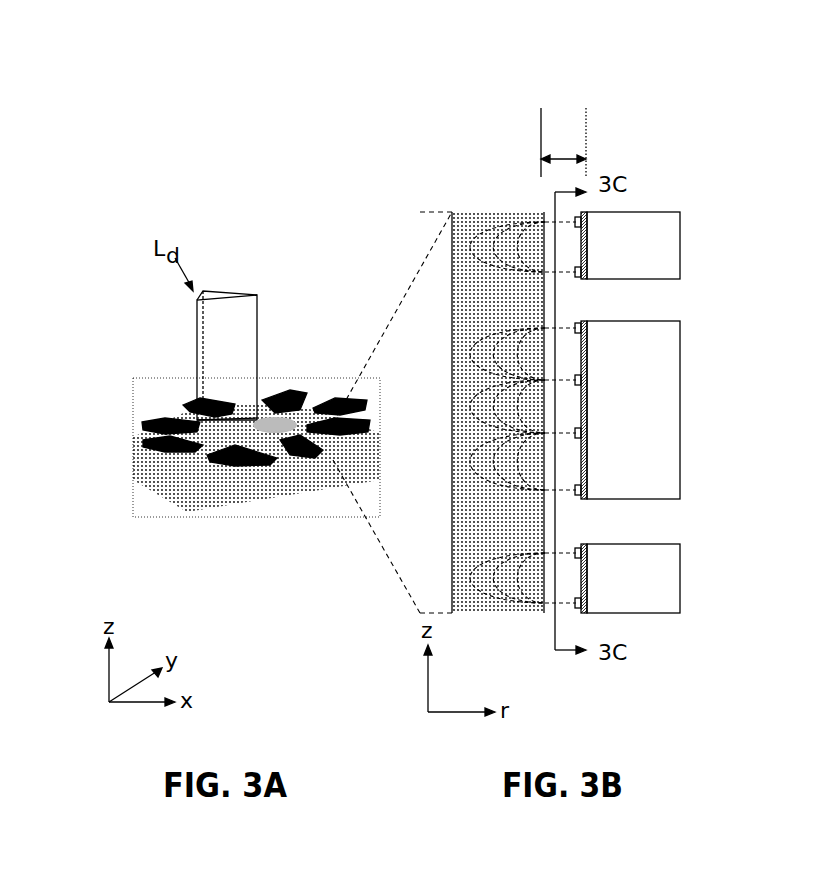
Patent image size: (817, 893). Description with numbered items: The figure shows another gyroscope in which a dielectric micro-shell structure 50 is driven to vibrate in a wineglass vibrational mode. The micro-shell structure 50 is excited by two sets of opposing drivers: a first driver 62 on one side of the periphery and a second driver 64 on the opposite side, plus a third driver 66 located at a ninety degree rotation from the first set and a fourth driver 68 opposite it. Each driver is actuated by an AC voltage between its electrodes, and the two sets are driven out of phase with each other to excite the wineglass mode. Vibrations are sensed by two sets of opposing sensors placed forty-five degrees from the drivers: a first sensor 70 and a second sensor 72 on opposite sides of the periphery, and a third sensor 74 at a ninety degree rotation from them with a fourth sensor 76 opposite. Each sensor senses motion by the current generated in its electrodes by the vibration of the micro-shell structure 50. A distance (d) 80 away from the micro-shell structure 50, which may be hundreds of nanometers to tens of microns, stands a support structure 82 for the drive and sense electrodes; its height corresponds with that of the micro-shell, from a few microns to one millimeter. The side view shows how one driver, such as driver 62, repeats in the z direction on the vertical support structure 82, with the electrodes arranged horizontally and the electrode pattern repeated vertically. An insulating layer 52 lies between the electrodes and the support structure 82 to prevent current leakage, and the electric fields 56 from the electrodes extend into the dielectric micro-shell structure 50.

In FIG. 3A, the dielectric micro-shell structure 50 is at (287, 415).
In FIG. 3B, the dielectric micro-shell structure 50 is at (460, 590).
In FIG. 3B, the insulating layer 52 is at (585, 280).
In FIG. 3B, the electric fields 56 is at (527, 605).
In FIG. 3A, the first driver 62 is at (143, 422).
In FIG. 3B, the first driver 62 is at (656, 449).
In FIG. 3A, the second driver 64 is at (367, 427).
In FIG. 3A, the third driver 66 is at (233, 462).
In FIG. 3A, the fourth driver 68 is at (287, 393).
In FIG. 3A, the first sensor 70 is at (257, 418).
In FIG. 3A, the second sensor 72 is at (300, 455).
In FIG. 3A, the third sensor 74 is at (133, 443).
In FIG. 3A, the fourth sensor 76 is at (357, 412).
In FIG. 3B, the distance (d) 80 is at (565, 118).
In FIG. 3A, the support structure 82 is at (157, 470).
In FIG. 3B, the support structure 82 is at (670, 258).